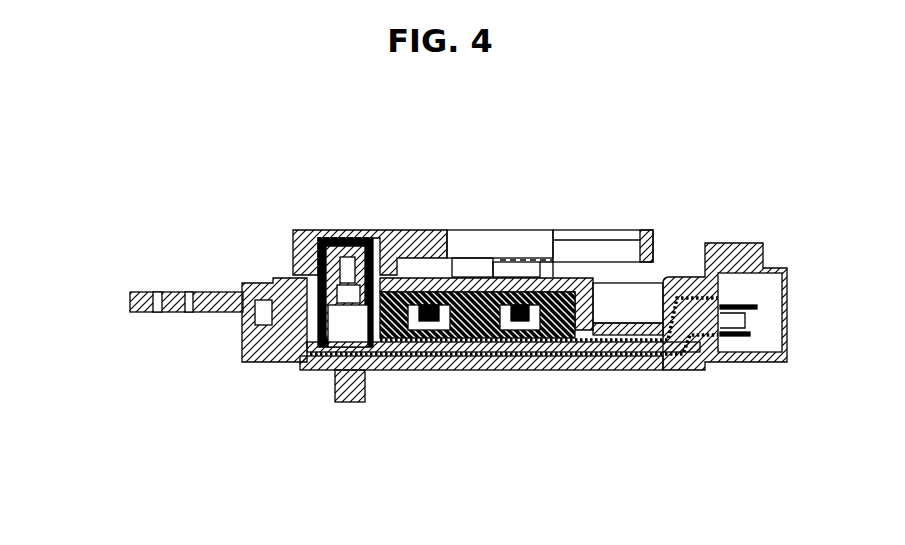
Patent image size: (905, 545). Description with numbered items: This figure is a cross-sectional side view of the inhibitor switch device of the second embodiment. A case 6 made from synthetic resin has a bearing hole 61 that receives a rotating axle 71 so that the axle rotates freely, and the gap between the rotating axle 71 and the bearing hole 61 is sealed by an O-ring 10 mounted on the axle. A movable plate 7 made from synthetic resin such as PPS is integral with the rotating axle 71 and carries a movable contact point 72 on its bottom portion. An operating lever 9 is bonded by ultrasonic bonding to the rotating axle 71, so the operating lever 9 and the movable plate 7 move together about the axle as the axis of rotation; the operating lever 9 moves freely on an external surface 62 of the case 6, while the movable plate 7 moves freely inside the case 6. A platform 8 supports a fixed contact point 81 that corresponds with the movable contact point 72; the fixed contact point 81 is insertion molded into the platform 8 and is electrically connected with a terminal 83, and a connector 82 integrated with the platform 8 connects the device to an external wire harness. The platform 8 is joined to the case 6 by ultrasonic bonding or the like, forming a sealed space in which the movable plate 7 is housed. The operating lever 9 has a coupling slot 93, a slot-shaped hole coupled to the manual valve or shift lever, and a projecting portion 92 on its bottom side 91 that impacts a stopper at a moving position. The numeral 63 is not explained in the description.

The case 6 is at (252, 280).
The bearing hole 61 is at (286, 272).
The external surface 62 is at (563, 277).
The window member 63 is at (462, 258).
The movable plate 7 is at (488, 342).
The rotating axle 71 is at (305, 358).
The movable contact point 72 is at (538, 332).
The platform 8 is at (263, 367).
The fixed contact point 81 is at (522, 354).
The connector 82 is at (738, 243).
The terminal 83 is at (757, 299).
The operating lever 9 is at (645, 230).
The bottom side 91 is at (478, 262).
The projecting portion 92 is at (523, 260).
The coupling slot 93 is at (617, 250).
The O-ring 10 is at (242, 347).